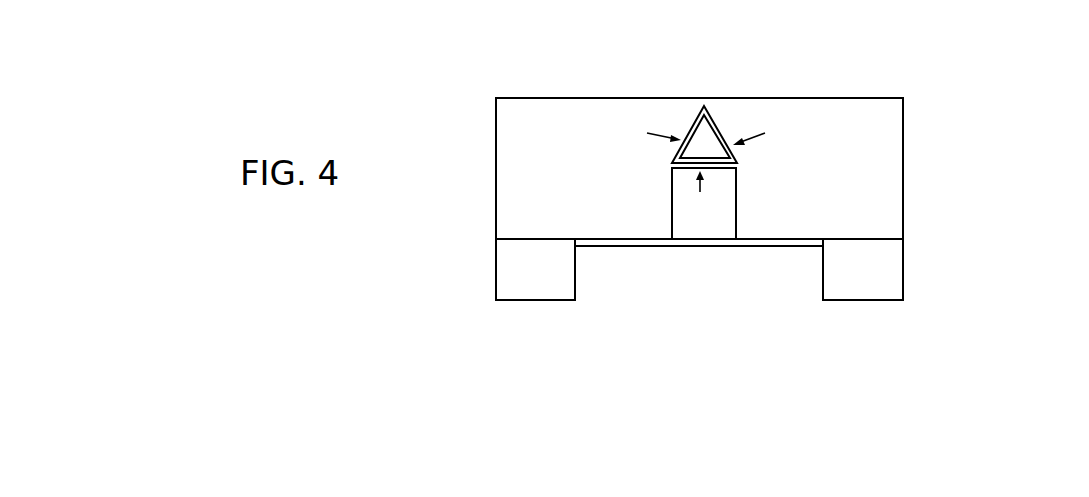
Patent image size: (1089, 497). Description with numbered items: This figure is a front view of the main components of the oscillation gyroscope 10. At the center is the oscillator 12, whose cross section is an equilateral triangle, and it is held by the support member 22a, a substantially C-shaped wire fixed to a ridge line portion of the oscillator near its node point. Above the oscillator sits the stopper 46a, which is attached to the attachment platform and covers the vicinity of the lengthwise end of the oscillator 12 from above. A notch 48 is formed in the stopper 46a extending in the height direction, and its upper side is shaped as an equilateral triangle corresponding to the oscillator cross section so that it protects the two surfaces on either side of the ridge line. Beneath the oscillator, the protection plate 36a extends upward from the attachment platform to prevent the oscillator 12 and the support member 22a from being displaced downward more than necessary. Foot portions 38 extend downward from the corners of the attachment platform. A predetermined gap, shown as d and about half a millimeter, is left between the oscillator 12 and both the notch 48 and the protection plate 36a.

The oscillation gyroscope 10 is at (921, 109).
The oscillator 12 is at (716, 141).
The support member 22a is at (703, 108).
The protection plate 36a is at (700, 233).
The foot portion 38 is at (538, 288).
The stopper 46a is at (587, 110).
The notch 48 is at (746, 172).